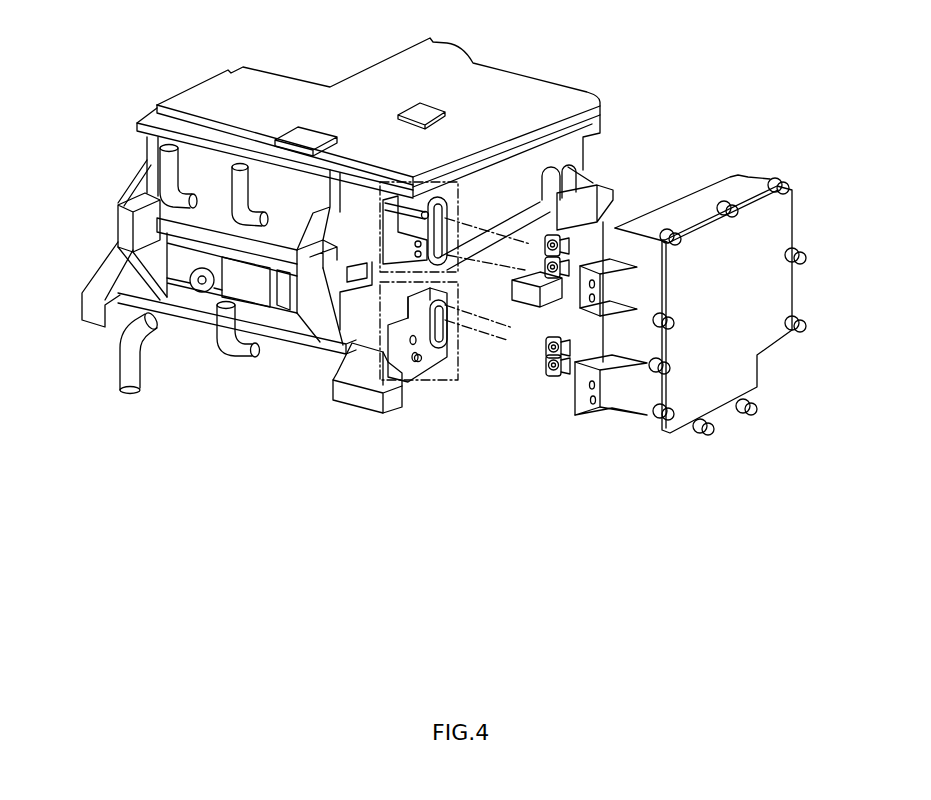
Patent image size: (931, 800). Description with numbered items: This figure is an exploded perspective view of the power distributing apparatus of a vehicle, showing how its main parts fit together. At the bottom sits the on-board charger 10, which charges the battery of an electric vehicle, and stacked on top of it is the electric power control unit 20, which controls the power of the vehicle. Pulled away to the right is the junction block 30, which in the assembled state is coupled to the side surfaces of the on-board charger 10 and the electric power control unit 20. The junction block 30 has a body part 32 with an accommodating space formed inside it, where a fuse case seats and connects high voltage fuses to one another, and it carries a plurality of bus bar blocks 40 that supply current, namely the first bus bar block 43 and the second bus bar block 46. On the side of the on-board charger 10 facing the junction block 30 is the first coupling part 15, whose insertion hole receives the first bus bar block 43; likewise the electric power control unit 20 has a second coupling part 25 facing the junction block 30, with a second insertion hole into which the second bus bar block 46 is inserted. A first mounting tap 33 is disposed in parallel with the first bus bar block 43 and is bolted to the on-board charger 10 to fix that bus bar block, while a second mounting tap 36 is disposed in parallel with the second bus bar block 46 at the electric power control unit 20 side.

The on-board charger 10 is at (96, 231).
The first coupling part 15 is at (433, 392).
The electric power control unit 20 is at (196, 68).
The second coupling part 25 is at (440, 172).
The junction block 30 is at (770, 143).
The body part 32 is at (700, 200).
The first mounting tap 33 is at (593, 400).
The second mounting tap 36 is at (597, 283).
The bus bar blocks 40 is at (517, 460).
The first bus bar block 43 is at (557, 370).
The second bus bar block 46 is at (563, 275).